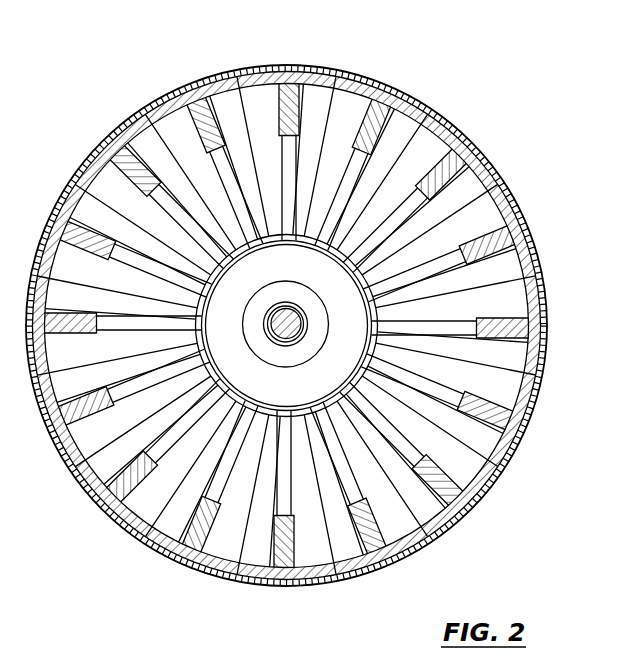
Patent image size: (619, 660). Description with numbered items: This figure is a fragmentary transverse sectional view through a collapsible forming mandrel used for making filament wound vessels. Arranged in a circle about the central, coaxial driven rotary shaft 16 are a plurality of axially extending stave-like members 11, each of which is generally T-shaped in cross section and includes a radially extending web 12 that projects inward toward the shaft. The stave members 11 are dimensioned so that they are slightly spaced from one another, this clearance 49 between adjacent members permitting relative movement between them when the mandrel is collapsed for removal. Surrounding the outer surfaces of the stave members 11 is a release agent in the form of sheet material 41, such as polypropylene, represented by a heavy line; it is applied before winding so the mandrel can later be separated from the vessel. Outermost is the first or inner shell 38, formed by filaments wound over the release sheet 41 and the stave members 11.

The inner shell 38 is at (128, 118).
The sheet material release agent 41 is at (520, 225).
The clearance 49 is at (420, 113).
The stave-like member 11 is at (200, 93).
The radially extending web 12 is at (216, 125).
The driven rotary shaft 16 is at (285, 327).